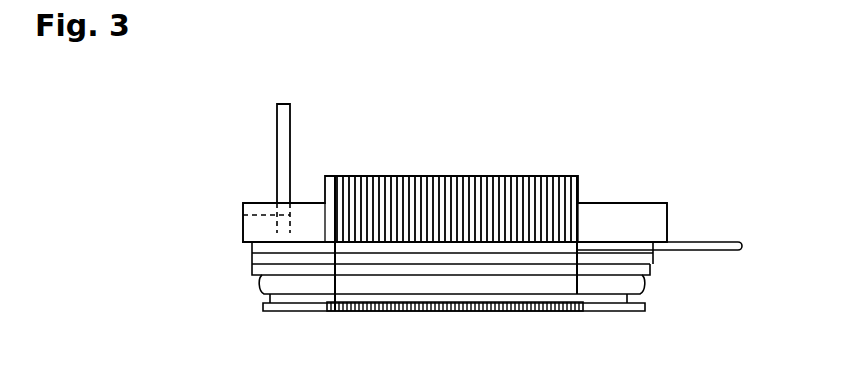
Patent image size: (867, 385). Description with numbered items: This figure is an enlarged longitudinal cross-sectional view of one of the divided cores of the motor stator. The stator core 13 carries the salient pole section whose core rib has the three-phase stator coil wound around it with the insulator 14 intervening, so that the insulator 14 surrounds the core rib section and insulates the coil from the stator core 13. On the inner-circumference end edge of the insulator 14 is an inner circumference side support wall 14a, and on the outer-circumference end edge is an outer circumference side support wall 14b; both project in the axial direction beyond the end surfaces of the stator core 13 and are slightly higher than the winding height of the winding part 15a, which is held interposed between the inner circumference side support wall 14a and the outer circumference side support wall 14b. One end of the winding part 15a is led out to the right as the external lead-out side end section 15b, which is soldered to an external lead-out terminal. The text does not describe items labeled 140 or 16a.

The stator core 13 is at (452, 175).
The insulator 14 is at (672, 225).
The inner circumference side support wall 14a is at (263, 307).
The outer circumference side support wall 14b is at (310, 211).
The tab base in housing 140 is at (243, 215).
The winding part 15a is at (446, 303).
The external lead-out side end section 15b is at (727, 251).
The upright tab 16a is at (277, 128).